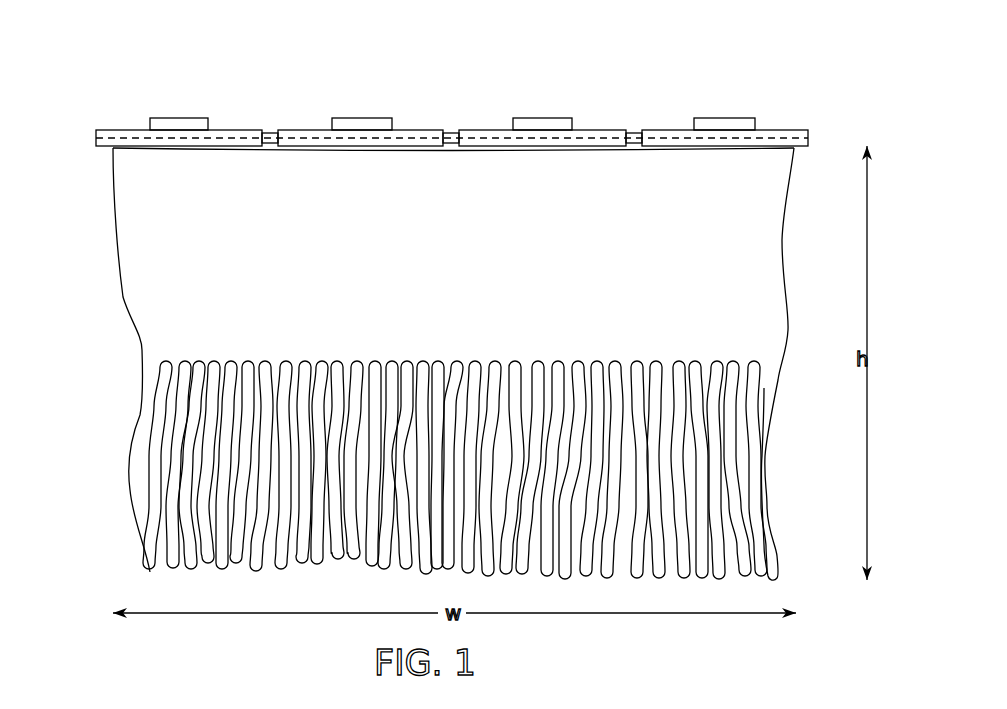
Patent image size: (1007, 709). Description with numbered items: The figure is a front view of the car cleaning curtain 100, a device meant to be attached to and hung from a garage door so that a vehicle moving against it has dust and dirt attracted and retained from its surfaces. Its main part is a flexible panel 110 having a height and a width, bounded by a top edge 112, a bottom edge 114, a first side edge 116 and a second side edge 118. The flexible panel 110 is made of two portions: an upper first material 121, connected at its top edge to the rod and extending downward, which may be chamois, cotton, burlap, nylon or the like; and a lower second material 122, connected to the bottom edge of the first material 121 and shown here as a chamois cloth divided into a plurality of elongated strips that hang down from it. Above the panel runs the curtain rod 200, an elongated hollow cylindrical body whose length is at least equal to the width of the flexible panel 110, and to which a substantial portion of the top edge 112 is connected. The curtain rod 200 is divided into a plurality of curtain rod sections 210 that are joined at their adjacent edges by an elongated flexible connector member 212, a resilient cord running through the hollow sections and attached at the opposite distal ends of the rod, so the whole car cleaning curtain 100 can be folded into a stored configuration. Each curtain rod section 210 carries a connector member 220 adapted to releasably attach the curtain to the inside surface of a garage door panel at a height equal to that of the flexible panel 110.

The car cleaning curtain 100 is at (451, 333).
The flexible panel 110 is at (437, 383).
The top edge 112 is at (180, 150).
The bottom edge 114 is at (146, 571).
The first side edge 116 is at (121, 297).
The second side edge 118 is at (784, 243).
The first material 121 is at (167, 226).
The second material 122 is at (201, 448).
The curtain rod 200 is at (440, 97).
The curtain rod sections 210 is at (310, 128).
The flexible connector member 212 is at (453, 131).
The connector member 220 is at (182, 115).